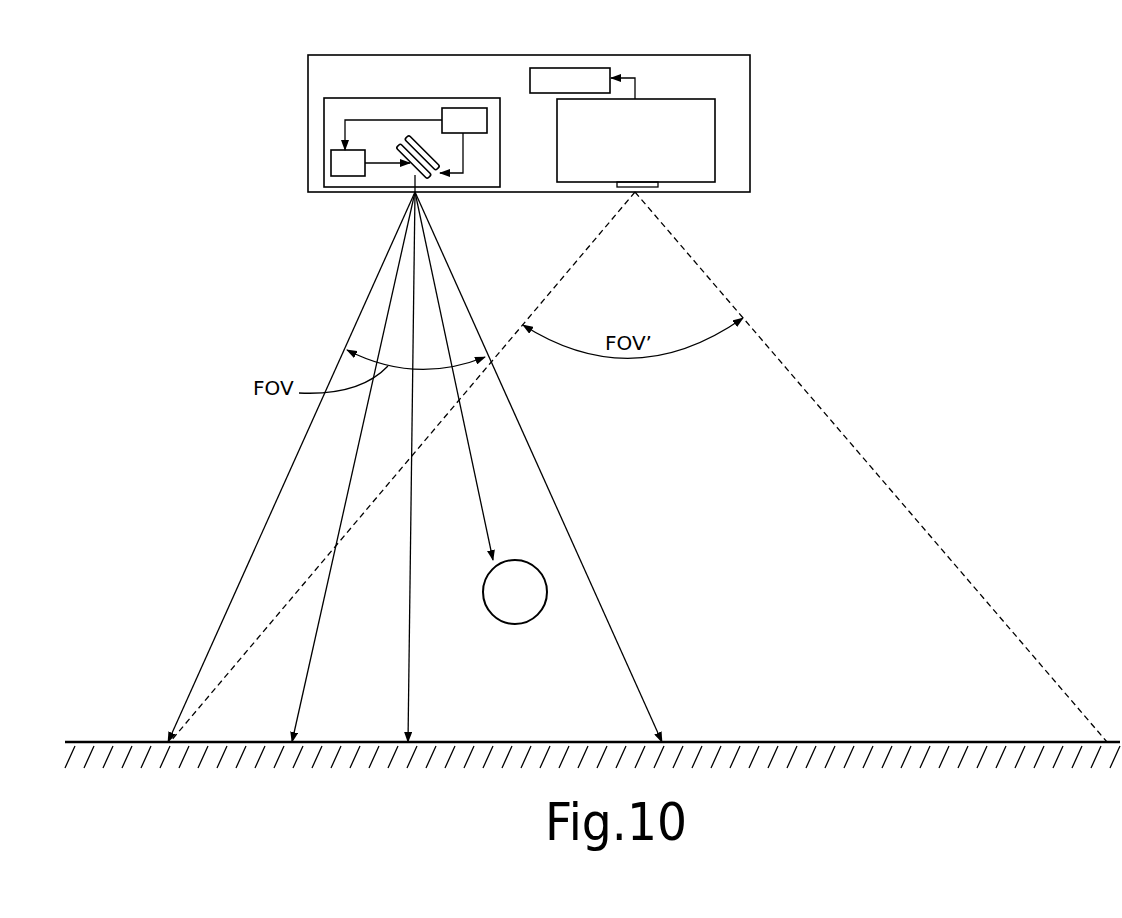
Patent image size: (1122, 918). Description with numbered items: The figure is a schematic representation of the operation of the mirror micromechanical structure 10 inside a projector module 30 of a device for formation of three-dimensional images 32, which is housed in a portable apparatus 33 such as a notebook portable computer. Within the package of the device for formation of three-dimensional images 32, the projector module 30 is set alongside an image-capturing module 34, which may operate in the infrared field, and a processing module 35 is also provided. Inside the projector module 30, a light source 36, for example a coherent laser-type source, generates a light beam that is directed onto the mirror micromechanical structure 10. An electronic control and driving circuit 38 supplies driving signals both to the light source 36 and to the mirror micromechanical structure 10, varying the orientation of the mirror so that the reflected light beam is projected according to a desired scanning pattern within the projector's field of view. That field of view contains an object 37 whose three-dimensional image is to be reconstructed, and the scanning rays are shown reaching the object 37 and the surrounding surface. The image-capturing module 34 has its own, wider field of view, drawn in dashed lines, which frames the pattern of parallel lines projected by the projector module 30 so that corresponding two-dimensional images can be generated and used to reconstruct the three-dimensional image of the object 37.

The mirror micromechanical structure 10 is at (415, 135).
The projector module 30 is at (351, 187).
The device for formation of three-dimensional images 32 is at (765, 152).
The portable apparatus 33 is at (225, 98).
The image-capturing module 34 is at (683, 168).
The processing module 35 is at (575, 67).
The light source 36 is at (331, 160).
The object 37 is at (525, 605).
The electronic control and driving circuit 38 is at (465, 113).